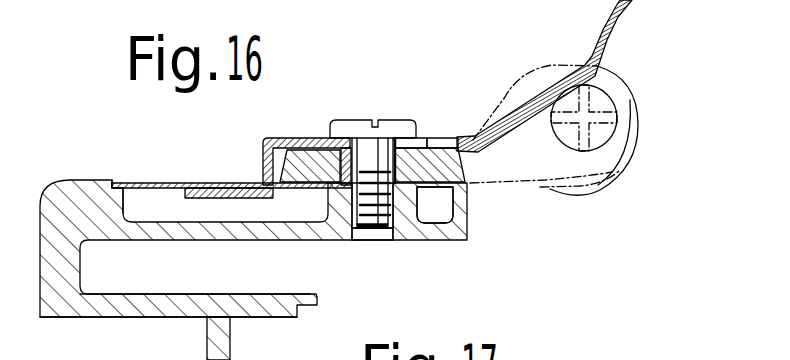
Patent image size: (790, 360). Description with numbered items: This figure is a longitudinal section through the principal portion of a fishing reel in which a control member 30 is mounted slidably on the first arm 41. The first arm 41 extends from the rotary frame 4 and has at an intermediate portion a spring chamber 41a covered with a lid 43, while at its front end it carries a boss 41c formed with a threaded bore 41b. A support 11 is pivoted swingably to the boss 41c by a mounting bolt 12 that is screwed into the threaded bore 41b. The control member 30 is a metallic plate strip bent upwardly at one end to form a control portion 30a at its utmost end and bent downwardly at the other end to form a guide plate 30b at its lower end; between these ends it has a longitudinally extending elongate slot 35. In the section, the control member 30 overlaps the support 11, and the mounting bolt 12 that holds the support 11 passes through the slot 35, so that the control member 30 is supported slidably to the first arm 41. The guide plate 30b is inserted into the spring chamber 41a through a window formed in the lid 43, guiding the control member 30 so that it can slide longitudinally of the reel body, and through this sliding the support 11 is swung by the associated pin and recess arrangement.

The rotary frame 4 is at (128, 303).
The support 11 is at (427, 143).
The mounting bolt 12 is at (352, 120).
The control member 30 is at (300, 138).
The control portion 30a is at (630, 12).
The guide plate 30b is at (218, 184).
The elongate slot 35 is at (452, 140).
The first arm 41 is at (322, 228).
The spring chamber 41a is at (130, 182).
The threaded bore 41b is at (387, 242).
The boss 41c is at (417, 198).
The lid 43 is at (157, 182).